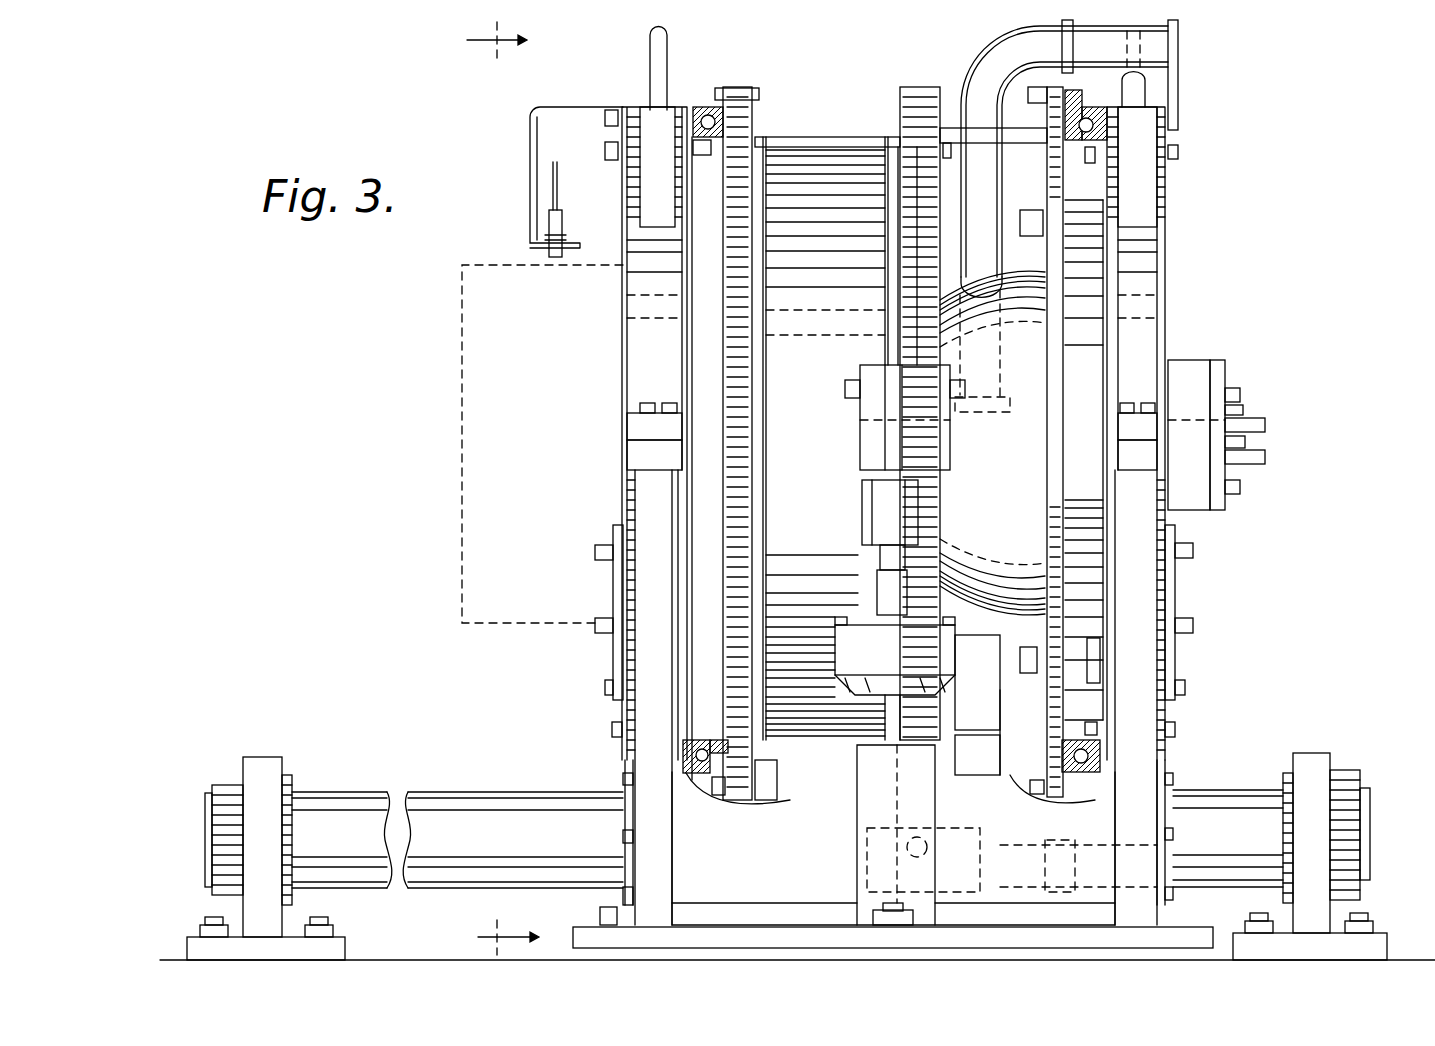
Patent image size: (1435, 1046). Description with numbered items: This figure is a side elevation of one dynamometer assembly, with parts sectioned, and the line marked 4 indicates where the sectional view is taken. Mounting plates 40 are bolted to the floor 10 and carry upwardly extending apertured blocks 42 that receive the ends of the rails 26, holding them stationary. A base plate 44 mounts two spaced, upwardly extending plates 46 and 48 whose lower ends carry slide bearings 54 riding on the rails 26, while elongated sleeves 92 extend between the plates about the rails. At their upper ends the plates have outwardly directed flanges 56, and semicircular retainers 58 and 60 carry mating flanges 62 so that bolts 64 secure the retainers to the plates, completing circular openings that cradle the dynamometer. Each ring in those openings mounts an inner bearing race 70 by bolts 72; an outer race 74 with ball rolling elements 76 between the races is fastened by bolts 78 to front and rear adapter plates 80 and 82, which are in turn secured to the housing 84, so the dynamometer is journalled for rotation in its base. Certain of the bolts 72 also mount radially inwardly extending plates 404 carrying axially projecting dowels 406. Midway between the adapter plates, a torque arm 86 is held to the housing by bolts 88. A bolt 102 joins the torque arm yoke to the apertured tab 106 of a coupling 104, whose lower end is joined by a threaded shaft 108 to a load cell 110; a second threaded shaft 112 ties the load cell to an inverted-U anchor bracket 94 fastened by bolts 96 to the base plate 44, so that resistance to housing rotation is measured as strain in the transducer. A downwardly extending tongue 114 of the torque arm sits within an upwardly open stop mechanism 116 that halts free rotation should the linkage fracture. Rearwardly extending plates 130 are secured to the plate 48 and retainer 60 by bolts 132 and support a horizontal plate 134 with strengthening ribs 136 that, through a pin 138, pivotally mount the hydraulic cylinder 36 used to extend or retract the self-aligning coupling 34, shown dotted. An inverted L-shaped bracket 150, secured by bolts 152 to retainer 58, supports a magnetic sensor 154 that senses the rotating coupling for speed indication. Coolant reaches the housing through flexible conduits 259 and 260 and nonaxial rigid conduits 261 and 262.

The floor 10 is at (1410, 960).
The section line 4- 4 is at (487, 488).
The rails 26 is at (447, 795).
The coupling 34 is at (470, 628).
The hydraulic cylinder 36 is at (1228, 512).
The mounting plates 40 is at (190, 948).
The apertured blocks 42 is at (258, 760).
The base plate 44 is at (573, 932).
The plate 46 is at (612, 700).
The plate 48 is at (1172, 728).
The slide bearings 54 is at (612, 762).
The flanges 56 is at (640, 465).
The semicircular retainer 58 is at (640, 322).
The semicircular retainer 60 is at (1160, 270).
The flanges 62 is at (630, 428).
The bolts 64 is at (670, 403).
The inner race 70 is at (683, 754).
The bolts 72 is at (610, 730).
The outer race 74 is at (693, 778).
The rolling elements 76 is at (728, 762).
The bolts 78 is at (760, 800).
The front adapter plate 80 is at (735, 118).
The rear adapter plate 82 is at (1047, 113).
The housing 84 is at (829, 137).
The torque arm 86 is at (915, 92).
The bolts 88 is at (948, 162).
The sleeves 92 is at (782, 893).
The anchor bracket 94 is at (857, 800).
The bolts 96 is at (880, 912).
The bolt 102 is at (848, 447).
The coupling 104 is at (862, 525).
The tab 106 is at (885, 400).
The threaded shaft 108 is at (880, 565).
The load cell 110 is at (840, 655).
The threaded shaft 112 is at (885, 707).
The tongue 114 is at (975, 880).
The stop mechanism 116 is at (982, 850).
The rearwardly extending plates 130 is at (1187, 372).
The bolts 132 is at (1243, 392).
The horizontally extending plate 134 is at (1222, 368).
The strengthening ribs 136 is at (1265, 457).
The pin 138 is at (1243, 410).
The L-shaped bracket 150 is at (578, 102).
The bolts 152 is at (605, 152).
The magnetic sensor 154 is at (548, 222).
The flexible conduit 259 is at (1100, 936).
The flexible conduit 260 is at (1157, 54).
The rigid conduit 261 is at (985, 730).
The rigid conduit 262 is at (988, 196).
The plates 404 is at (613, 665).
The dowels 406 is at (598, 625).